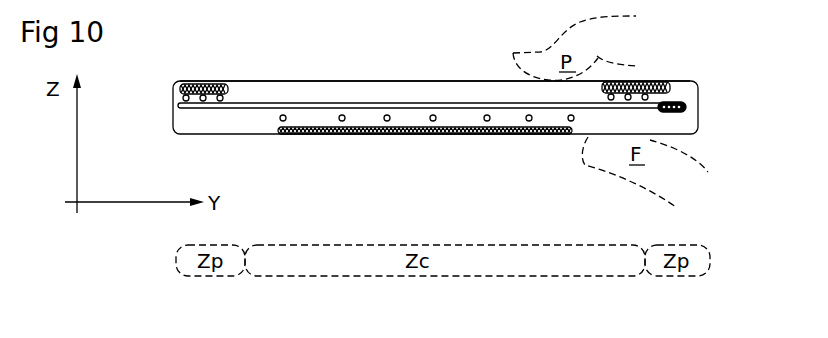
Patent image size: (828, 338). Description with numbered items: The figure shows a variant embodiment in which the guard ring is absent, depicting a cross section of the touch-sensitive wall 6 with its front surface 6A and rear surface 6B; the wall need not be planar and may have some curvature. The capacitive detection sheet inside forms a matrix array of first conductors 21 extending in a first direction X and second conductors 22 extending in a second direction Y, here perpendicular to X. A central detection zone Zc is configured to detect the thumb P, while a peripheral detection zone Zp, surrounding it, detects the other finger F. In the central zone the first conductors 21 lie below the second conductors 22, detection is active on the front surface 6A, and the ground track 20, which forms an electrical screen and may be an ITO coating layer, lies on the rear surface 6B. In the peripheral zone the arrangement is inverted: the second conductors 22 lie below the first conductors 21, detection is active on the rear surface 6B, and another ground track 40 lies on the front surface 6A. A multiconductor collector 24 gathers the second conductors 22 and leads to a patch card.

The touch-sensitive wall 6 is at (163, 112).
The front surface 6A is at (372, 81).
The rear surface 6B is at (430, 135).
The another ground track 40 is at (212, 86).
The first conductors 21 is at (342, 115).
The second conductors 22 is at (455, 103).
The multiconductor collector 24 is at (680, 112).
The ground track 20 is at (303, 135).